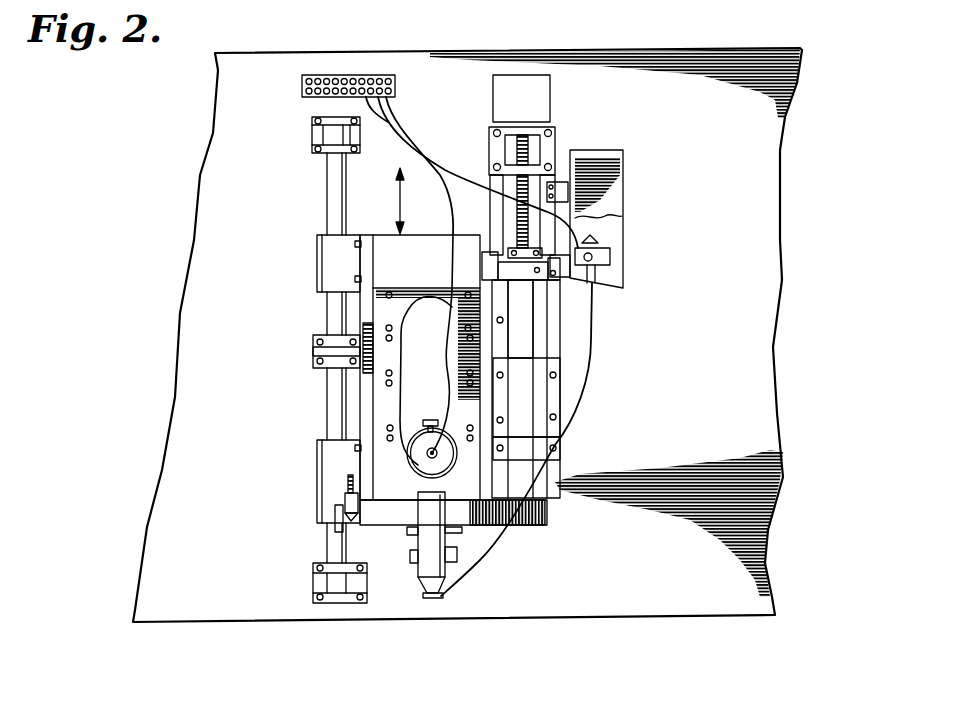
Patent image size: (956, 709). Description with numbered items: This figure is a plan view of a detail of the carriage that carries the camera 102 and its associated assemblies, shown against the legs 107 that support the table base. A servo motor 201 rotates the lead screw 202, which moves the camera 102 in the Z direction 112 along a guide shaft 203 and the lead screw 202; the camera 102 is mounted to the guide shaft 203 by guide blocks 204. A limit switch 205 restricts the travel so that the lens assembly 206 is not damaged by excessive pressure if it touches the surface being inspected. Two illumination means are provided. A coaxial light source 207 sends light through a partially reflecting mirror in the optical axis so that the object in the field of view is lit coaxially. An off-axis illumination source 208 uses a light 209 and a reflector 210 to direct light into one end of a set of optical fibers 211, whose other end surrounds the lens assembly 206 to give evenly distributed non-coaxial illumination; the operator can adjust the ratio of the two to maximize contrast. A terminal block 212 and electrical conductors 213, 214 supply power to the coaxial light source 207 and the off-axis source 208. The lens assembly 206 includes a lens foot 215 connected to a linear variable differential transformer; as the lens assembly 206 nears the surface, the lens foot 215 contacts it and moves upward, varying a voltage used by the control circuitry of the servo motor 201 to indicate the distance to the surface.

The legs 107 is at (645, 48).
The terminal block 212 is at (354, 76).
The electrical conductor 213 is at (400, 125).
The electrical conductor 214 is at (452, 175).
The servo motor 201 is at (551, 96).
The lead screw 202 is at (578, 196).
The off-axis illumination source 208 is at (630, 281).
The reflector 210 is at (600, 242).
The light 209 is at (610, 262).
The optical fibers 211 is at (590, 363).
The guide shaft 203 is at (318, 178).
The Z direction 112 is at (395, 201).
The guide blocks 204 is at (317, 275).
The limit switch 205 is at (316, 521).
The camera 102 is at (373, 390).
The coaxial light source 207 is at (417, 458).
The lens assembly 206 is at (425, 570).
The lens foot 215 is at (442, 597).